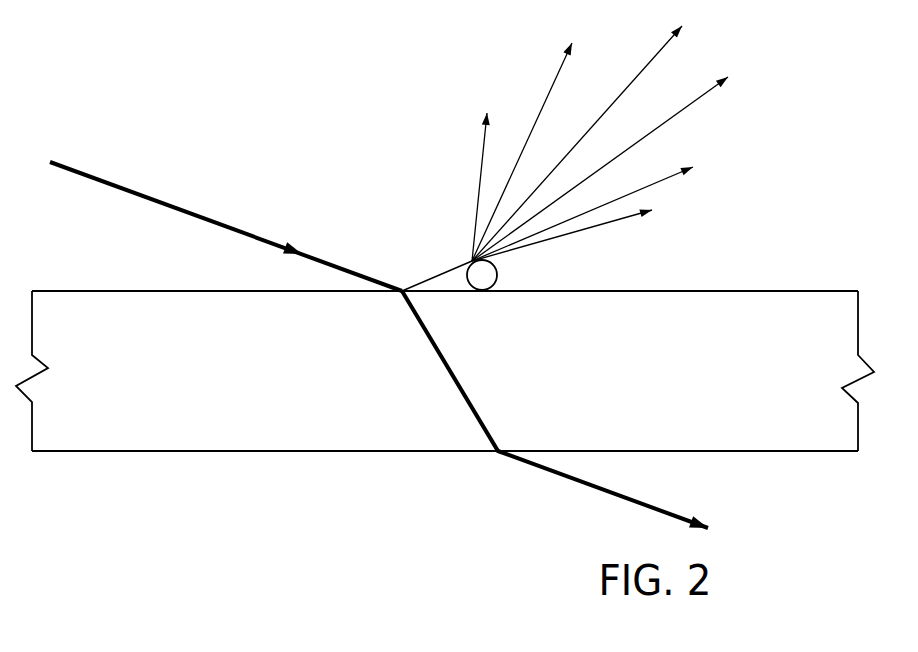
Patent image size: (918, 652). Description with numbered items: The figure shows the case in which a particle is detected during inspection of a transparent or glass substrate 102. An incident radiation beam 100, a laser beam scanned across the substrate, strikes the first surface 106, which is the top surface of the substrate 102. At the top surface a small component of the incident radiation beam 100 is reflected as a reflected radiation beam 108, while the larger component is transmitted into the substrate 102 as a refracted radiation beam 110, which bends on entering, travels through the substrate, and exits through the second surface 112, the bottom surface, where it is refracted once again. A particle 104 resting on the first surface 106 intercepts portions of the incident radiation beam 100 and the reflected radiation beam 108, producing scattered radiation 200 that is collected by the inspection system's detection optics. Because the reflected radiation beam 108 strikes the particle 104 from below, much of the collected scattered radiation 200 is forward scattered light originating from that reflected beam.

The incident radiation beam 100 is at (188, 208).
The substrate 102 is at (693, 376).
The particle 104 is at (497, 268).
The first surface 106 is at (703, 292).
The reflected radiation beam 108 is at (417, 282).
The refracted radiation beam 110 is at (457, 378).
The second surface 112 is at (235, 451).
The scattered radiation 200 is at (632, 213).